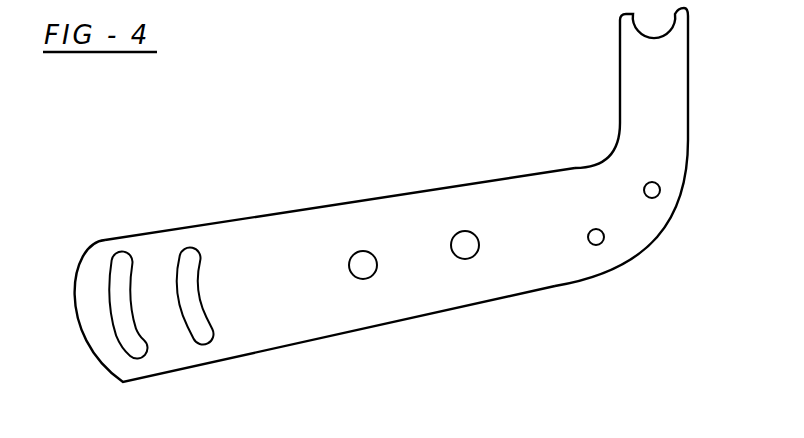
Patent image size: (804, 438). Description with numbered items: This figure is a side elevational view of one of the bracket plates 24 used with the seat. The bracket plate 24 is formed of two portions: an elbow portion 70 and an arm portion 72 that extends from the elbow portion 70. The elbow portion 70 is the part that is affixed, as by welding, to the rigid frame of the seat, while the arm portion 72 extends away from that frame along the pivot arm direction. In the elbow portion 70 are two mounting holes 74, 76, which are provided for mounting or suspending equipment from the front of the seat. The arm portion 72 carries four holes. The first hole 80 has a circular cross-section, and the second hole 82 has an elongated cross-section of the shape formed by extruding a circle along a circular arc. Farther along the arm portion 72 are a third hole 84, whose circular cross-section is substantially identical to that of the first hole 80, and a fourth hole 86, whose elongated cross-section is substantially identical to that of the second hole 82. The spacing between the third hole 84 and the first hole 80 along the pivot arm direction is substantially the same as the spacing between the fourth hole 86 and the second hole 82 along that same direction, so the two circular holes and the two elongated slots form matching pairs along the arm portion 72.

The bracket plate 24 is at (381, 195).
The elbow portion 70 is at (631, 217).
The arm portion 72 is at (340, 205).
The mounting hole 74 is at (689, 191).
The mounting hole 76 is at (603, 283).
The first hole 80 is at (438, 211).
The third hole 84 is at (332, 256).
The second hole 82 is at (178, 259).
The fourth hole 86 is at (77, 305).